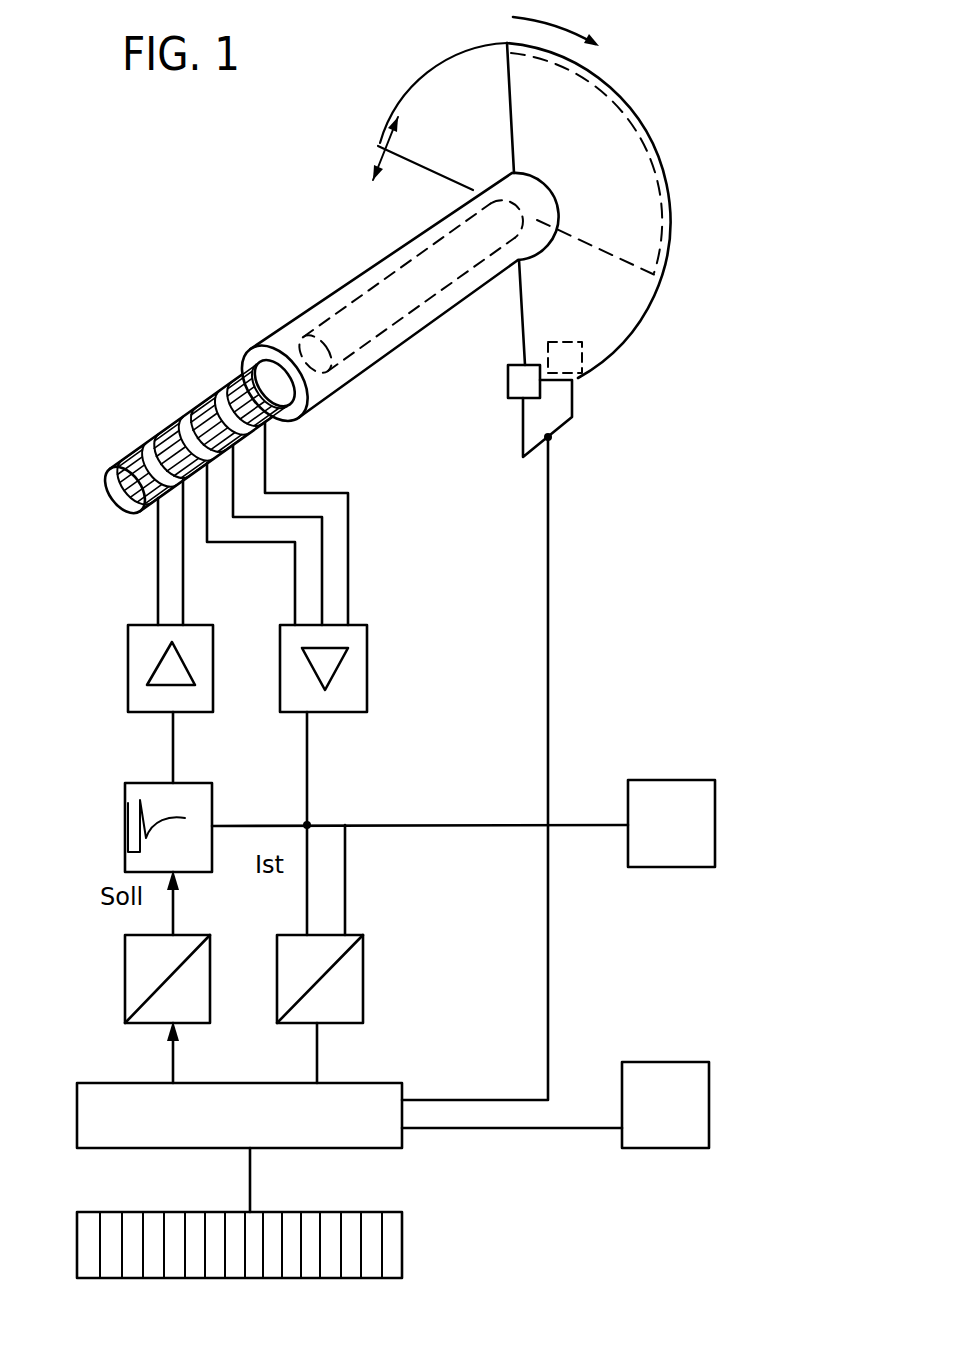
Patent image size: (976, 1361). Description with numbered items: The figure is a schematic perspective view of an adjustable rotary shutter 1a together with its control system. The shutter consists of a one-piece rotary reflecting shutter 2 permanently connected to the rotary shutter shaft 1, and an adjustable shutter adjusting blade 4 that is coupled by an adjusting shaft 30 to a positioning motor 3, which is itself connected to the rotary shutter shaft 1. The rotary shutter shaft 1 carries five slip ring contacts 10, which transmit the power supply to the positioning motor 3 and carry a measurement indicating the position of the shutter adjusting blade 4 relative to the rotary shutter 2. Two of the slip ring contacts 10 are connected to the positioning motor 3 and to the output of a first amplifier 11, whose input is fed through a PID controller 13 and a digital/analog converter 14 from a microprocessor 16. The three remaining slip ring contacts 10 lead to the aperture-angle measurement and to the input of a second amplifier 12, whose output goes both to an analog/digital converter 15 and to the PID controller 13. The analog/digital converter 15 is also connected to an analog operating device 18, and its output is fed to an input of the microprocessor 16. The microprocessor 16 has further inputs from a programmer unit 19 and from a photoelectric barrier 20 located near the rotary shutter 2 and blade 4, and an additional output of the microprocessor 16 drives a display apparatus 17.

The rotary shutter shaft 1 is at (283, 340).
The adjustable rotary shutter 1a is at (255, 196).
The rotary reflecting shutter 2 is at (637, 313).
The positioning motor 3 is at (391, 328).
The shutter adjusting blade 4 is at (420, 92).
The slip ring contacts 10 is at (178, 437).
The first amplifier 11 is at (132, 652).
The second amplifier 12 is at (358, 645).
The PID controller 13 is at (130, 805).
The digital/analog converter 14 is at (130, 957).
The analog/digital converter 15 is at (353, 970).
The microprocessor 16 is at (80, 1122).
The display apparatus 17 is at (392, 1238).
The analog operating device 18 is at (700, 797).
The programmer unit 19 is at (692, 1090).
The photoelectric barrier 20 is at (508, 398).
The adjusting shaft 30 is at (445, 222).